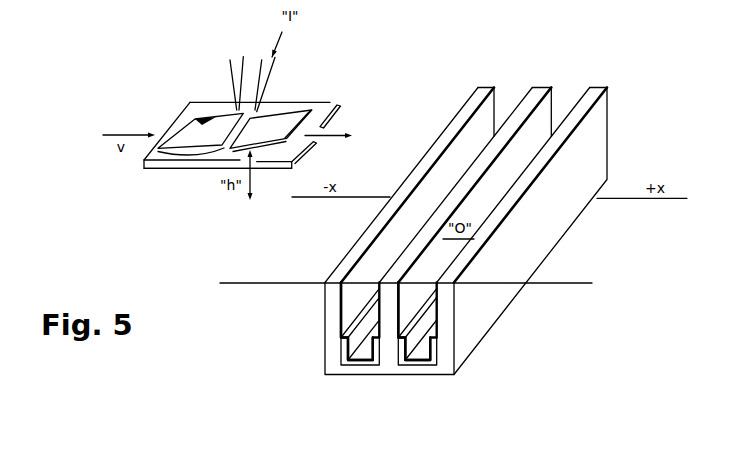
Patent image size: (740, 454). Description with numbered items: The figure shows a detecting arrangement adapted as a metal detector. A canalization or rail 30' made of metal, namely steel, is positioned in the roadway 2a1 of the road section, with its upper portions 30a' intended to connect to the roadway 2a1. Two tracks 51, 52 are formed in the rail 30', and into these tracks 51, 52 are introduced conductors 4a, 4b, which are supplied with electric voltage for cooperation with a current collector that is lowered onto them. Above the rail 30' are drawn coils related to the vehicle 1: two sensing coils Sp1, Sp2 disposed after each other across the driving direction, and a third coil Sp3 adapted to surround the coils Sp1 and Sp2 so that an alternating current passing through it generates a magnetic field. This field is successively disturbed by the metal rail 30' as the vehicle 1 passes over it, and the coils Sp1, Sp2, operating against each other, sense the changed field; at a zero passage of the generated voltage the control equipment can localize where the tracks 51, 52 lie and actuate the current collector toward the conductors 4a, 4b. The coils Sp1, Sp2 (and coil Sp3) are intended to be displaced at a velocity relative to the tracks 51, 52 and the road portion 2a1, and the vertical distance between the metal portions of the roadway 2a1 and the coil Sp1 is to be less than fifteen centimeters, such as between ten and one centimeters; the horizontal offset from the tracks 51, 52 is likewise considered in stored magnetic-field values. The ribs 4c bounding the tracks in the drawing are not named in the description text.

The vehicle 1 is at (200, 87).
The first coil Sp1 is at (194, 125).
The second coil Sp2 is at (291, 115).
The third coil Sp3 is at (169, 170).
The rail 30' is at (413, 234).
The upper portions 30a' is at (366, 185).
The roadway 2a1 is at (406, 272).
The conductor 4a is at (360, 353).
The conductor 4b is at (417, 353).
The ribs 4c is at (480, 87).
The track 51 is at (348, 308).
The track 52 is at (422, 323).